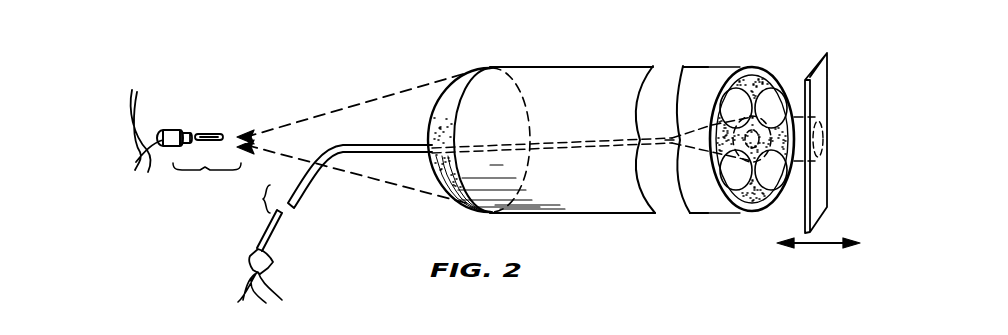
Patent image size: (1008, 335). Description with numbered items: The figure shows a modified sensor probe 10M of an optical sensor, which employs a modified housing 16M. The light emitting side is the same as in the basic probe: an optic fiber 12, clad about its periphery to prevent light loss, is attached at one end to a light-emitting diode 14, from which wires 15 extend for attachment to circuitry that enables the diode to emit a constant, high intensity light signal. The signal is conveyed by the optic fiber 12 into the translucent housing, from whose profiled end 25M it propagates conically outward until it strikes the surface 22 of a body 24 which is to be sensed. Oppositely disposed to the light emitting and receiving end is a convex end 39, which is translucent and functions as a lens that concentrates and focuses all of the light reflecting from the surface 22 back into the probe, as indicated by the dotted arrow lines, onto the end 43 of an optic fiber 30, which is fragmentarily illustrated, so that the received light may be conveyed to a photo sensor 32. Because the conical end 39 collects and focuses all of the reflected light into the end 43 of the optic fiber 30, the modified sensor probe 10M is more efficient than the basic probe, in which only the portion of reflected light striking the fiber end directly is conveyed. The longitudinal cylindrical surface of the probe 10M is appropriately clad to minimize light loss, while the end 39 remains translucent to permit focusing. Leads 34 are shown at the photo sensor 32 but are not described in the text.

The modified sensor probe 10M is at (548, 67).
The optic fiber 12 is at (298, 198).
The light-emitting diode 14 is at (266, 258).
The wires 15 is at (274, 295).
The modified housing 16M is at (606, 195).
The surface 22 is at (802, 82).
The body 24 is at (820, 87).
The end 25M is at (753, 211).
The optic fiber 30 is at (187, 134).
The photo sensor 32 is at (166, 128).
The emitter cords 34 is at (143, 116).
The convex end 39 is at (428, 112).
The end of optic fiber 43 is at (222, 138).